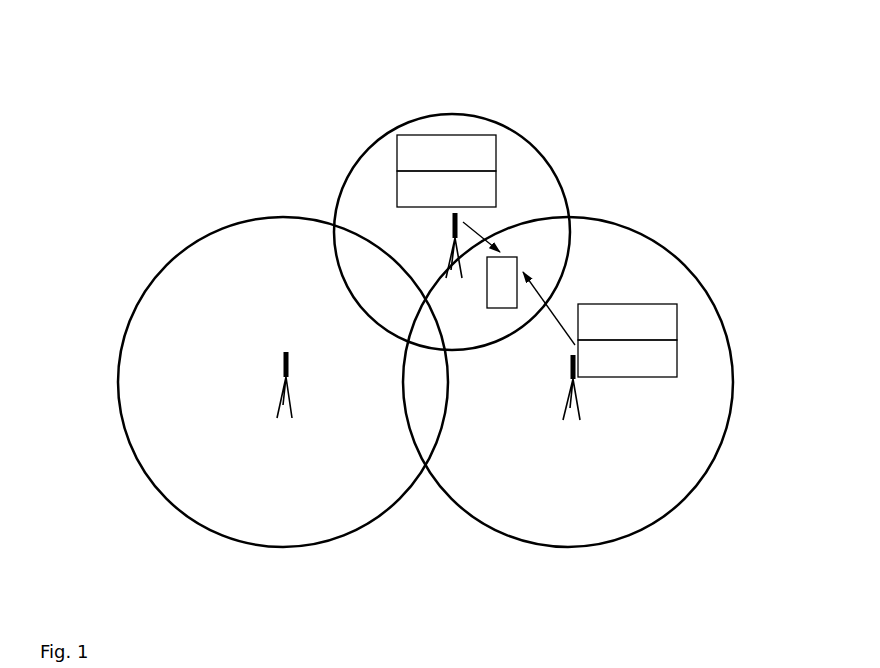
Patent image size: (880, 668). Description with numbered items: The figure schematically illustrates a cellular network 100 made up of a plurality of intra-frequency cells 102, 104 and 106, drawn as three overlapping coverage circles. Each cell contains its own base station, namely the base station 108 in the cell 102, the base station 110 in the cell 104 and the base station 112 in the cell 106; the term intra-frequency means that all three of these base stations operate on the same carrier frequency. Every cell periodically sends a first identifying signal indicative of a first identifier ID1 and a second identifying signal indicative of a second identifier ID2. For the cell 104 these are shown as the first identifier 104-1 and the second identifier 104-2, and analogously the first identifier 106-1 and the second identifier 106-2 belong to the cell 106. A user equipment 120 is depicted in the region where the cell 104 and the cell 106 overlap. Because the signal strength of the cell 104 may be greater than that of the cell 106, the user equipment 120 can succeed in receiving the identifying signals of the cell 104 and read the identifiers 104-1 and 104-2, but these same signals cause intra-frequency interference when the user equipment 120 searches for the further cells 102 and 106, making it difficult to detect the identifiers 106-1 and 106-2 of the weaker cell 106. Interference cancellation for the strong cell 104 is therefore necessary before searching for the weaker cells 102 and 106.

The cellular network 100 is at (168, 29).
The intra-frequency cell 102 is at (167, 247).
The intra-frequency cell 104 is at (522, 116).
The intra-frequency cell 106 is at (680, 237).
The first identifier 104-1 is at (457, 141).
The second identifier 104-2 is at (398, 190).
The first identifier 106-1 is at (670, 325).
The second identifier 106-2 is at (668, 365).
The base station 108 is at (289, 363).
The base station 110 is at (452, 222).
The base station 112 is at (582, 387).
The user equipment 120 is at (502, 272).